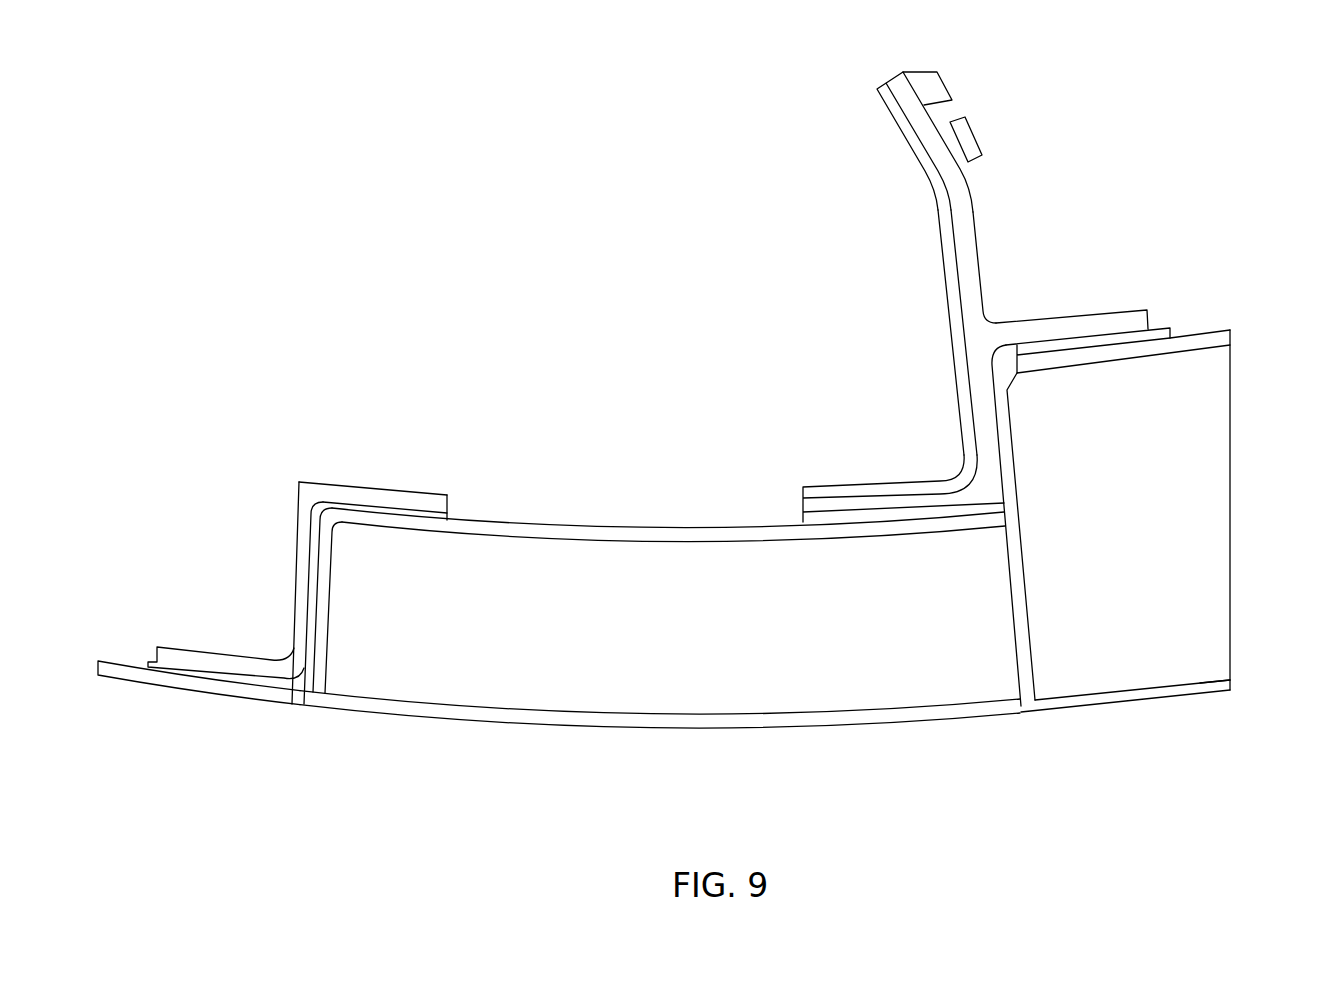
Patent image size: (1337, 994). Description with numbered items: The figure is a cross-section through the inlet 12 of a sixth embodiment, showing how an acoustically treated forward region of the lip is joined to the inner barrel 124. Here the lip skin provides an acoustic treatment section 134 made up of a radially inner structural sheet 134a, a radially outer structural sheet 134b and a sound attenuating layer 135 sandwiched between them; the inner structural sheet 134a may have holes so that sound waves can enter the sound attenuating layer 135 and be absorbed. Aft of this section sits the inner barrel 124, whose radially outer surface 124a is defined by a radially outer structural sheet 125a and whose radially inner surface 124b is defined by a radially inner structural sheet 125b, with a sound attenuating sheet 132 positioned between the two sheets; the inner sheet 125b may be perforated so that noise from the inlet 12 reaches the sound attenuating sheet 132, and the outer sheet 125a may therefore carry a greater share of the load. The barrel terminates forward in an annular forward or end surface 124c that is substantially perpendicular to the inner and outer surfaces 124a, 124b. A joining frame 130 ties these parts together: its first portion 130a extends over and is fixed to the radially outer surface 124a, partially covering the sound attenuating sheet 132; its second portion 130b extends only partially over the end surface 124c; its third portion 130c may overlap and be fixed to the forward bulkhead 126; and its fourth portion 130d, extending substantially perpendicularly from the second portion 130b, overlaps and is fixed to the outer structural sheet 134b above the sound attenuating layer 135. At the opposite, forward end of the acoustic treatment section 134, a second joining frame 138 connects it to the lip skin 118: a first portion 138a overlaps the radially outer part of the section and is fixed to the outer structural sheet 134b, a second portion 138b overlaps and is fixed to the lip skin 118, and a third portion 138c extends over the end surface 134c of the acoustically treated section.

The inlet 12 is at (455, 133).
The lip skin 118 is at (220, 691).
The inner barrel 124 is at (1079, 721).
The radially outer surface 124a is at (1203, 343).
The radially inner surface 124b is at (1173, 691).
The forward surface 124c is at (1012, 498).
The radially outer structural sheet 125a is at (1233, 338).
The radially inner structural sheet 125b is at (1232, 681).
The forward bulkhead 126 is at (938, 117).
The joining frame 130 is at (984, 258).
The first portion of the joining frame 130a is at (1077, 329).
The second portion of the joining frame 130b is at (980, 425).
The third portion of the joining frame 130c is at (970, 183).
The fourth portion of the joining frame 130d is at (797, 508).
The sound attenuating sheet 132 is at (1195, 508).
The acoustic treatment section 134 is at (643, 518).
The radially inner structural sheet 134a is at (640, 724).
The radially outer structural sheet 134b is at (512, 527).
The end surface 134c is at (315, 608).
The sound attenuating layer 135 is at (688, 643).
The second joining frame 138 is at (300, 481).
The first portion of the second joining frame 138a is at (400, 494).
The second portion of the second joining frame 138b is at (192, 654).
The third portion of the second joining frame 138c is at (290, 556).